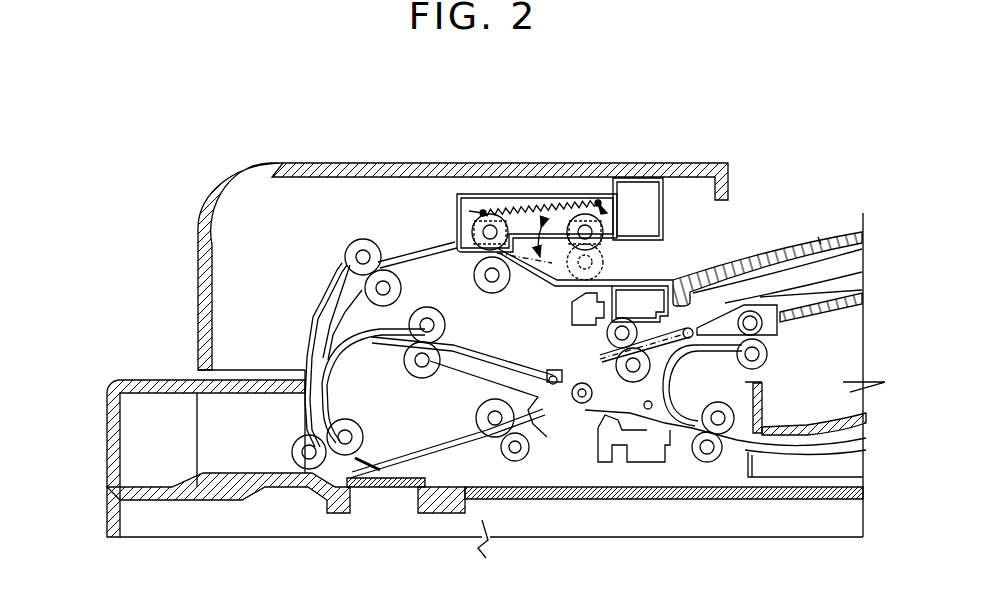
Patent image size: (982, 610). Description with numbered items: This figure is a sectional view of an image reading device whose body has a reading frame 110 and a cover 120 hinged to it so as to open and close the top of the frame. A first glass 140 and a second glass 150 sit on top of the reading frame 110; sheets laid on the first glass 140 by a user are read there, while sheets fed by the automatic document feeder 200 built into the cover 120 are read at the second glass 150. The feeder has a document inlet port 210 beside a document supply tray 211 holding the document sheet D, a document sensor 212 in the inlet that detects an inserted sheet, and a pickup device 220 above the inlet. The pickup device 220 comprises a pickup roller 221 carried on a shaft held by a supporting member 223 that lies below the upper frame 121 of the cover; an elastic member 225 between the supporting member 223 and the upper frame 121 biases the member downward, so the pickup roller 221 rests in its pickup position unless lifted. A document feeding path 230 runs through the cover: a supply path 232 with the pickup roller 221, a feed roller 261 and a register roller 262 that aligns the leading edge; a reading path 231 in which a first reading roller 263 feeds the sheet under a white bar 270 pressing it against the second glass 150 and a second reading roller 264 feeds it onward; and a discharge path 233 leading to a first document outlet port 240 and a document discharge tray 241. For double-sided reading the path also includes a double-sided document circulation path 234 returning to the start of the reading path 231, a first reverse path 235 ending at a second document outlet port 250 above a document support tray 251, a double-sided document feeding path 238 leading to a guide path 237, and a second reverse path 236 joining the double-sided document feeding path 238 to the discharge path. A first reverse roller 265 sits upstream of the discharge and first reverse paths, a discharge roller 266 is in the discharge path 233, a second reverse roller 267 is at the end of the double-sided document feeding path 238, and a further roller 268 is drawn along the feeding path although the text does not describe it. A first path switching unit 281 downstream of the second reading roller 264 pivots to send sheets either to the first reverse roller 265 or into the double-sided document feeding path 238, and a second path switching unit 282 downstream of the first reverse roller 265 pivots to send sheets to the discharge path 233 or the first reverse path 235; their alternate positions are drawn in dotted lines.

The reading frame 110 is at (104, 507).
The cover 120 is at (188, 247).
The upper frame 121 is at (598, 202).
The first glass 140 is at (585, 500).
The second glass 150 is at (385, 490).
The automatic document feeder 200 is at (710, 150).
The document inlet port 210 is at (665, 250).
The document supply tray 211 is at (788, 250).
The document sensor 212 is at (574, 301).
The pickup device 220 is at (620, 208).
The pickup roller 221 is at (572, 221).
The supporting member 223 is at (541, 222).
The elastic member 225 is at (505, 208).
The document feeding path 230 is at (317, 297).
The reading path 231 is at (445, 465).
The supply path 232 is at (420, 256).
The discharge path 233 is at (708, 342).
The double-sided document circulation path 234 is at (487, 352).
The first reverse path 235 is at (705, 307).
The second reverse path 236 is at (667, 435).
The guide path 237 is at (803, 443).
The double-sided document feeding path 238 is at (592, 420).
The first document outlet port 240 is at (782, 347).
The document discharge tray 241 is at (830, 420).
The second document outlet port 250 is at (778, 300).
The document support tray 251 is at (820, 315).
The feed roller 261 is at (480, 221).
The register roller 262 is at (353, 246).
The first reading roller 263 is at (344, 419).
The second reading roller 264 is at (485, 405).
The first reverse roller 265 is at (605, 333).
The discharge roller 266 is at (770, 355).
The second reverse roller 267 is at (720, 404).
The roller 268 is at (447, 344).
The white bar 270 is at (373, 455).
The first path switching unit 281 is at (545, 440).
The second path switching unit 282 is at (655, 327).
The document sheet D is at (818, 237).